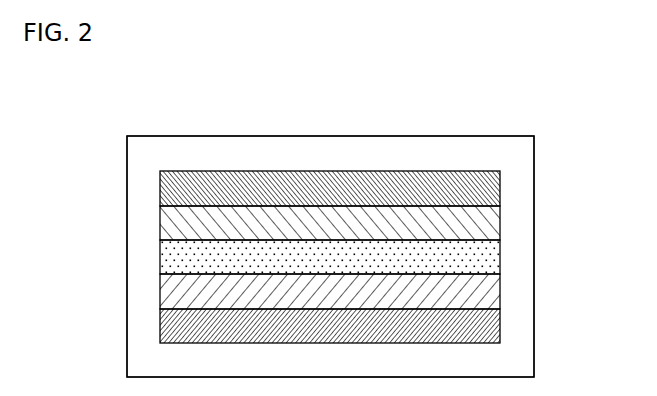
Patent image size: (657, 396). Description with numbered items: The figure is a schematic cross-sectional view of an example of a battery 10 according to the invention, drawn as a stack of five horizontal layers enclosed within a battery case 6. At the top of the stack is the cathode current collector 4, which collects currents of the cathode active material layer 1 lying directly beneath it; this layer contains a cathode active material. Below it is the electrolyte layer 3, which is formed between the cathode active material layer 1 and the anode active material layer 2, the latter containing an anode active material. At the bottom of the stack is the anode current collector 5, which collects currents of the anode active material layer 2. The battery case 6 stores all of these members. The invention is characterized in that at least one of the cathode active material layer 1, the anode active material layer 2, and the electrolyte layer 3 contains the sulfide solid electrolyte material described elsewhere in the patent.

The battery 10 is at (523, 101).
The battery case 6 is at (515, 148).
The cathode current collector 4 is at (500, 180).
The cathode active material layer 1 is at (490, 216).
The electrolyte layer 3 is at (489, 250).
The anode active material layer 2 is at (489, 283).
The anode current collector 5 is at (500, 316).